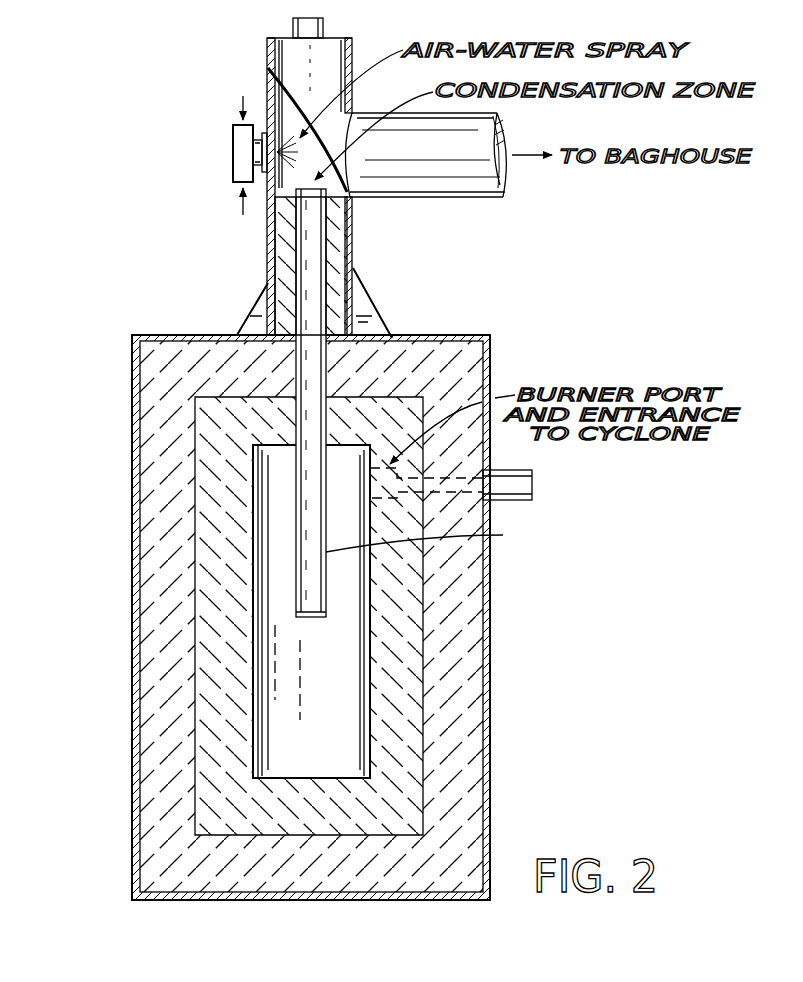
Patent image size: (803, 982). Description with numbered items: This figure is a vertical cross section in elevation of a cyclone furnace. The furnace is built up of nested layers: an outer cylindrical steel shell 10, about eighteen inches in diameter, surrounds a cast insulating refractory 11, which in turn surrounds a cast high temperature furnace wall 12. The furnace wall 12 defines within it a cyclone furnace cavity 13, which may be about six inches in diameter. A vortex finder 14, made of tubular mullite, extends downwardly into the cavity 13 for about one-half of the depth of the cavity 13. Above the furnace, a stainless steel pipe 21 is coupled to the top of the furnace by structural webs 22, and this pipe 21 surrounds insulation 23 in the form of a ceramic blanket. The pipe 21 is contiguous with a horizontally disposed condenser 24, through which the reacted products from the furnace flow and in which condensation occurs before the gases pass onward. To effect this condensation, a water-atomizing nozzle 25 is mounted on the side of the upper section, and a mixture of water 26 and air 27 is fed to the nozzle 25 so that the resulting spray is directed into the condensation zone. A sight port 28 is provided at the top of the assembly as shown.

The cylindrical steel shell 10 is at (489, 713).
The cast insulating refractory 11 is at (468, 372).
The cast high temperature furnace wall 12 is at (207, 420).
The cyclone furnace cavity 13 is at (290, 700).
The vortex finder 14 is at (431, 538).
The stainless steel pipe 21 is at (340, 247).
The structural webs 22 is at (255, 305).
The insulation 23 is at (340, 262).
The condenser 24 is at (485, 197).
The water-atomizing nozzle 25 is at (232, 150).
The water 26 is at (218, 88).
The air 27 is at (229, 226).
The sight port 28 is at (326, 28).